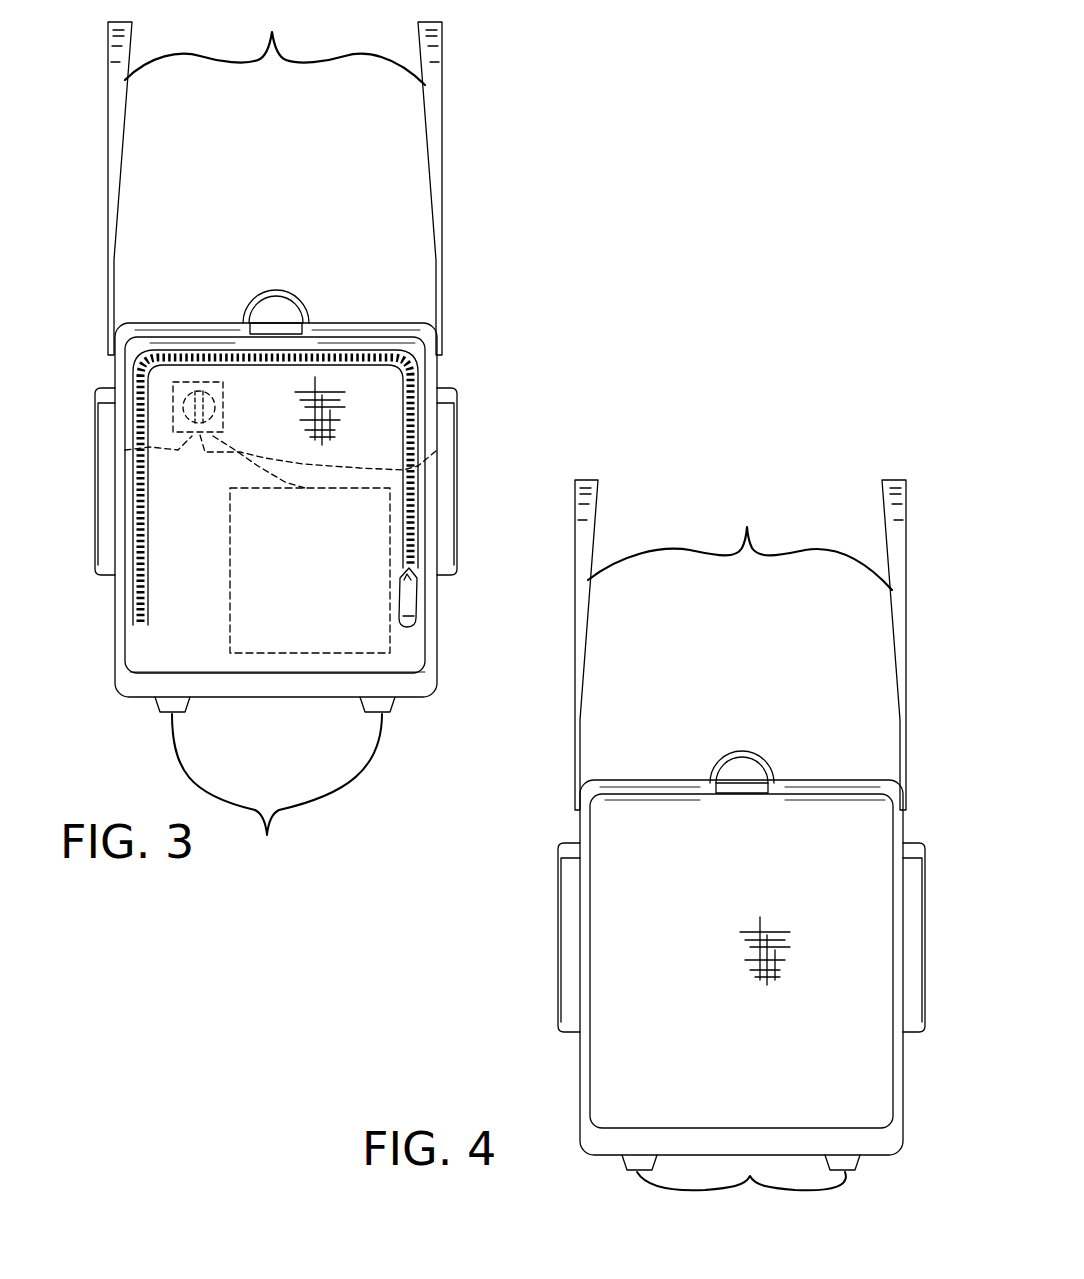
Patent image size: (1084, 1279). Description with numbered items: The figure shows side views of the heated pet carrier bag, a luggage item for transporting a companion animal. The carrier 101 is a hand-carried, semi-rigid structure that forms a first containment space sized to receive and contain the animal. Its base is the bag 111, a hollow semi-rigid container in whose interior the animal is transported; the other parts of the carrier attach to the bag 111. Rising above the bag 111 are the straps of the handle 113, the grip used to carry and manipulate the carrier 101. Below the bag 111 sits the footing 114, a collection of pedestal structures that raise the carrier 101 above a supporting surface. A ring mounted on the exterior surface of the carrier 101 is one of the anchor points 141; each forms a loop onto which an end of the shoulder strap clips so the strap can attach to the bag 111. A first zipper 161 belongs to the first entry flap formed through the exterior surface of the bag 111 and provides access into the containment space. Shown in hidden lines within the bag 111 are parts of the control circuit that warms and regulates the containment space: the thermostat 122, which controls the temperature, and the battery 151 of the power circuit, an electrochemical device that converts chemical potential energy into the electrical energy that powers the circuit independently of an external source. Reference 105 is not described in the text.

In FIG. 3, the carrier 101 is at (100, 372).
In FIG. 3, the bottom panel 105 is at (178, 642).
In FIG. 3, the bag 111 is at (115, 592).
In FIG. 4, the bag 111 is at (835, 857).
In FIG. 3, the handle 113 is at (275, 177).
In FIG. 4, the handle 113 is at (520, 1075).
In FIG. 3, the footing 114 is at (275, 787).
In FIG. 4, the footing 114 is at (741, 1193).
In FIG. 3, the thermostat 122 is at (206, 407).
In FIG. 3, the anchor points 141 is at (288, 298).
In FIG. 4, the anchor points 141 is at (748, 770).
In FIG. 3, the battery 151 is at (302, 600).
In FIG. 3, the first zipper 161 is at (410, 385).